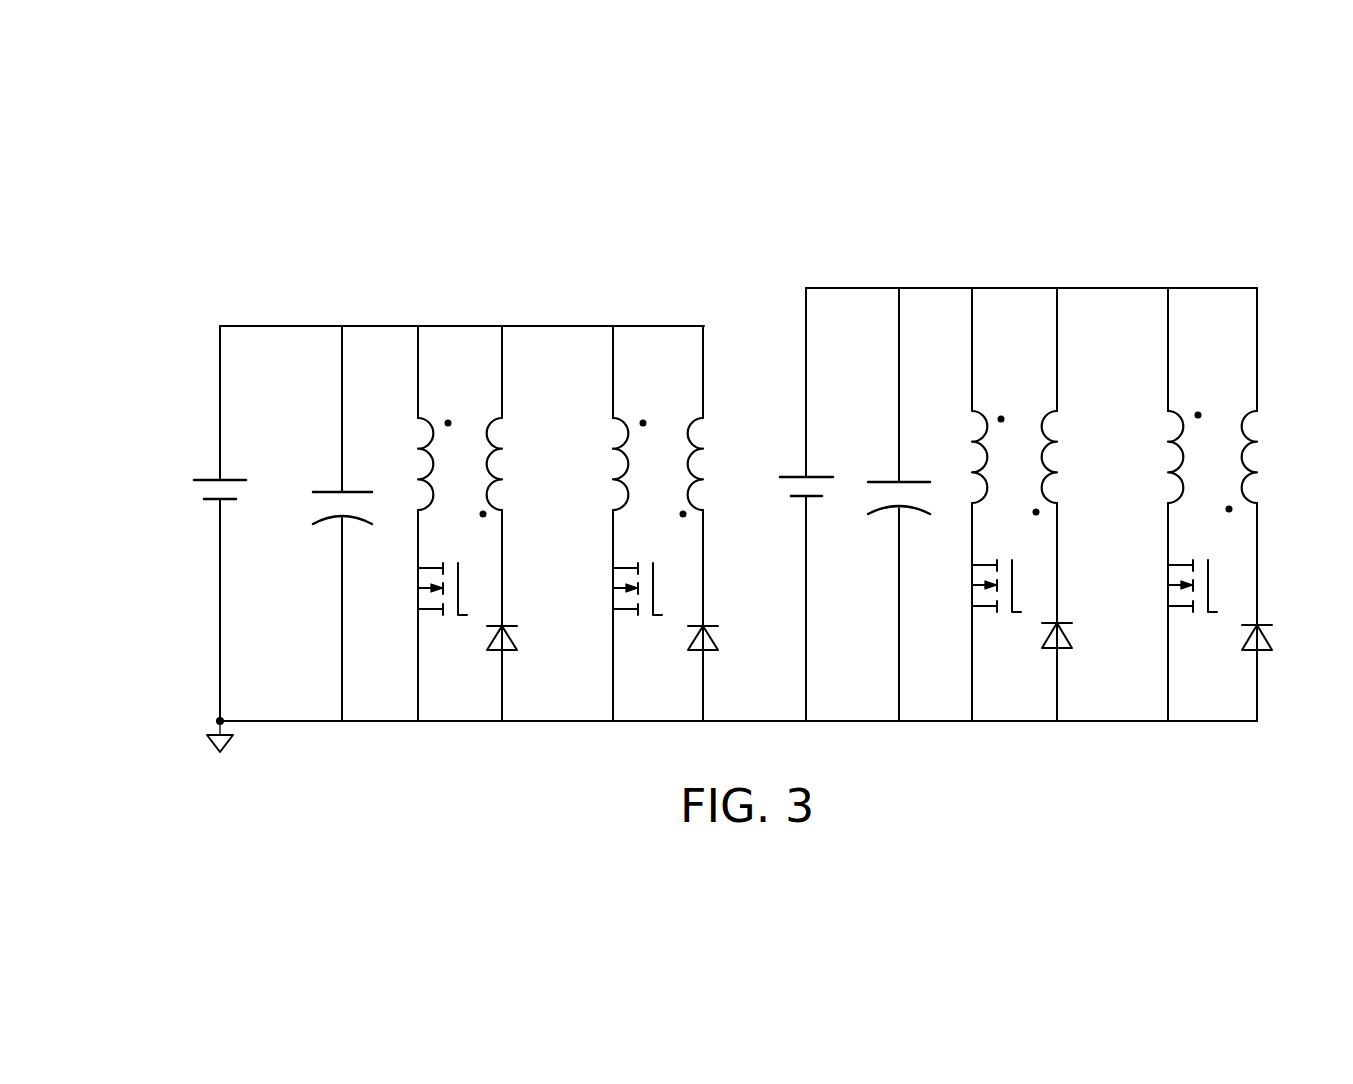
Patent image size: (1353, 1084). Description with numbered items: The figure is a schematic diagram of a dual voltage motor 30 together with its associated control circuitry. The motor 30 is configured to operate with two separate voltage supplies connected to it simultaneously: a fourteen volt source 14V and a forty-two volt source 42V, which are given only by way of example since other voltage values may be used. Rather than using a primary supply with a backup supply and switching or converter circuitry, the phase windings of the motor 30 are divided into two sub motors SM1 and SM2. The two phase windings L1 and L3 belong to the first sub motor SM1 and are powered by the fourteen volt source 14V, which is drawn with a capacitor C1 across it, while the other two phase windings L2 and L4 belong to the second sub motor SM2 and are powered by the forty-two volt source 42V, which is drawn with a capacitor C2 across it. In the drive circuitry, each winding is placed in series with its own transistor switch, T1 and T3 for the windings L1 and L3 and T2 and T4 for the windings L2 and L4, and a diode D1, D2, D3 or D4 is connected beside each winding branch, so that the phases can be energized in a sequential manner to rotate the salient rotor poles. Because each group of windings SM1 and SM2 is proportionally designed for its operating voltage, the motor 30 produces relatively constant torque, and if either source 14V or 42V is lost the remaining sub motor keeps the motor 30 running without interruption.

The dual voltage motor 30 is at (396, 267).
The 14 volt voltage source 14V is at (152, 455).
The 42 volt voltage source 42V is at (737, 452).
The capacitor C1 is at (328, 523).
The capacitor C2 is at (885, 504).
The phase winding L1 is at (460, 422).
The phase winding L2 is at (1014, 402).
The phase winding L3 is at (658, 523).
The phase winding L4 is at (1212, 504).
The sub motor SM1 is at (585, 487).
The sub motor SM2 is at (1143, 484).
The transistor switch T1 is at (420, 589).
The transistor switch T2 is at (974, 587).
The transistor switch T3 is at (615, 589).
The transistor switch T4 is at (1170, 587).
The diode D1 is at (523, 652).
The diode D2 is at (1078, 650).
The diode D3 is at (724, 652).
The diode D4 is at (1281, 650).